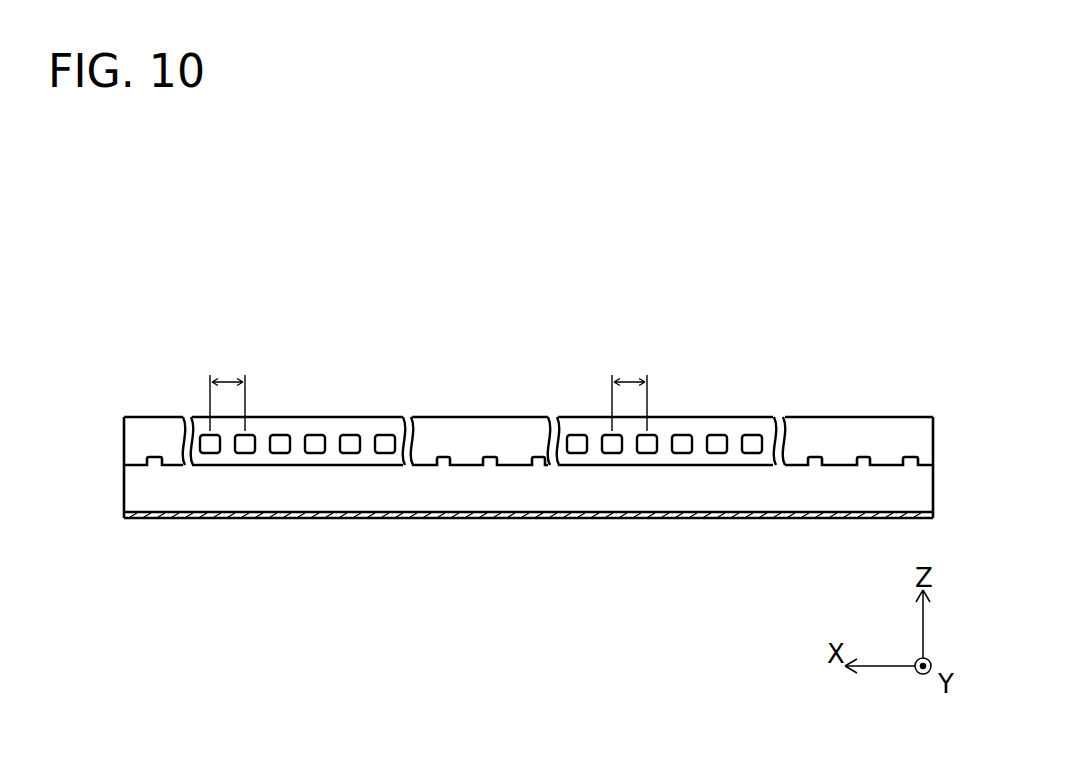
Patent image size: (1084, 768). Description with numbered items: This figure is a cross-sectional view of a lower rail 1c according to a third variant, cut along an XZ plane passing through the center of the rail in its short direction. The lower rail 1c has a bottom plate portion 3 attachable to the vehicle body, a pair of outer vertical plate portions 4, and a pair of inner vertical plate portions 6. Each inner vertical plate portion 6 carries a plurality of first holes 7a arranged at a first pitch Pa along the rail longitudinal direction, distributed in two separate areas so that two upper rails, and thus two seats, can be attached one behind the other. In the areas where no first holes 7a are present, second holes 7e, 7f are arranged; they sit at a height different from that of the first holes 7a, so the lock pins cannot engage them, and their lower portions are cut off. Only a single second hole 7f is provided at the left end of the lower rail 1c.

The lower rail 1c is at (150, 312).
The bottom plate portion 3 is at (487, 512).
The outer vertical plate portion 4 is at (449, 500).
The inner vertical plate portion 6 is at (425, 458).
The first holes 7a is at (317, 440).
The second holes 7e is at (534, 462).
The second hole 7f is at (153, 462).
The first pitch Pa is at (428, 389).